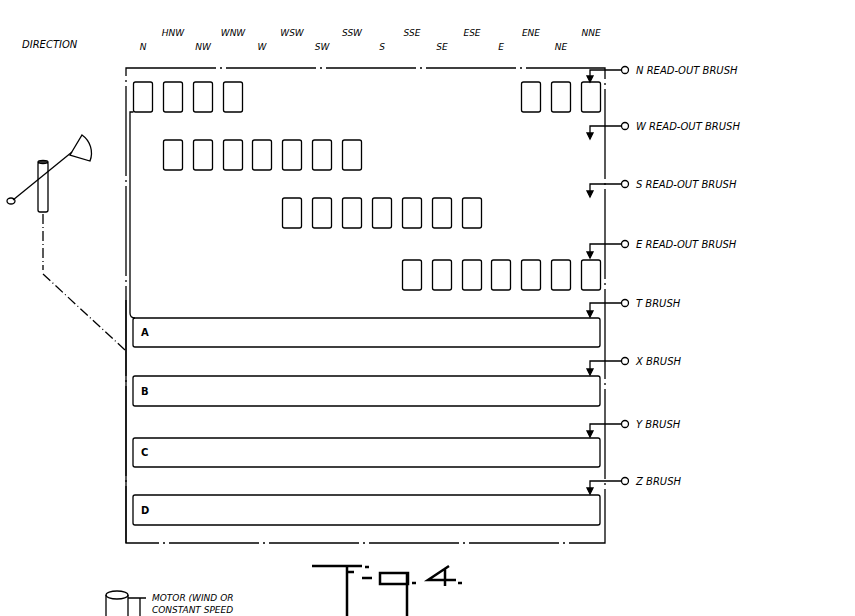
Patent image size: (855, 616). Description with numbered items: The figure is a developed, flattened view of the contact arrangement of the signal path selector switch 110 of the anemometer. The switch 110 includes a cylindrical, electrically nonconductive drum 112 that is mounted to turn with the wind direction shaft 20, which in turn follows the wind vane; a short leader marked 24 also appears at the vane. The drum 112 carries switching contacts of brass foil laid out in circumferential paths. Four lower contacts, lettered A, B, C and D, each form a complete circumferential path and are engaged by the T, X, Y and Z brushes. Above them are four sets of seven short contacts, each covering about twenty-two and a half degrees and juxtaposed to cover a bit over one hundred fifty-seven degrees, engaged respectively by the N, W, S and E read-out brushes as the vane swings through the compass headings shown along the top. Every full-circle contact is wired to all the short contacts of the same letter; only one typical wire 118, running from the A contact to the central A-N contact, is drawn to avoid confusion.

The wind vane 24 is at (61, 148).
The wind direction shaft 20 is at (43, 268).
The wire 118 is at (130, 227).
The cylindrical drum 112 is at (125, 459).
The signal path selector switch 110 is at (114, 532).